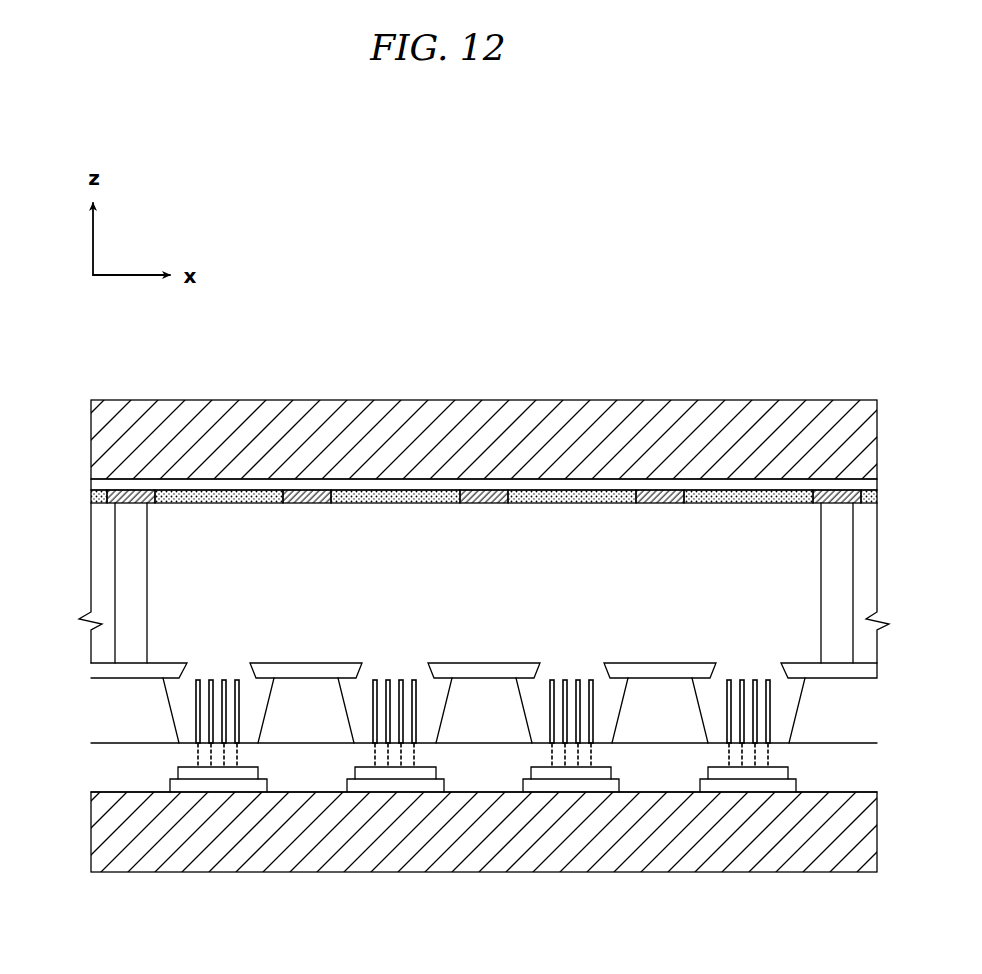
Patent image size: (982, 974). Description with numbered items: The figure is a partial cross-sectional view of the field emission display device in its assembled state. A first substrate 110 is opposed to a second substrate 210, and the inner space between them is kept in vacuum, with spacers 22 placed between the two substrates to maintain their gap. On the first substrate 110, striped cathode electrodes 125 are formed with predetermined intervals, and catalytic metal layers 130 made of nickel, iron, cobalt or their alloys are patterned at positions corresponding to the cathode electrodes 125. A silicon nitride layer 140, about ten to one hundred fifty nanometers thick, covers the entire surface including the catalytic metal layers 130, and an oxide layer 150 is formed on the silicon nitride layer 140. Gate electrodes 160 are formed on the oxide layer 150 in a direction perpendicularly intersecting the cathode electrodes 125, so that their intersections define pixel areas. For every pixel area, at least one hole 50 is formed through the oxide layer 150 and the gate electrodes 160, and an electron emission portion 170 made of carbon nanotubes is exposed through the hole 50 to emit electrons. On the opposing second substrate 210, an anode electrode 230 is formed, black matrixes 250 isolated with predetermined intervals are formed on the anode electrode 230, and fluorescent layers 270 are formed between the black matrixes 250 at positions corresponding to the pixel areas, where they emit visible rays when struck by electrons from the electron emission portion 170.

The first substrate 110 is at (750, 845).
The cathode electrode 125 is at (383, 783).
The catalytic metal layer 130 is at (409, 772).
The silicon nitride layer 140 is at (667, 770).
The oxide layer 150 is at (493, 725).
The gate electrode 160 is at (314, 670).
The electron emission portion 170 is at (197, 705).
The hole 50 is at (444, 765).
The spacer 22 is at (128, 570).
The second substrate 210 is at (538, 420).
The anode electrode 230 is at (393, 487).
The black matrix 250 is at (305, 497).
The fluorescent layer 270 is at (240, 497).